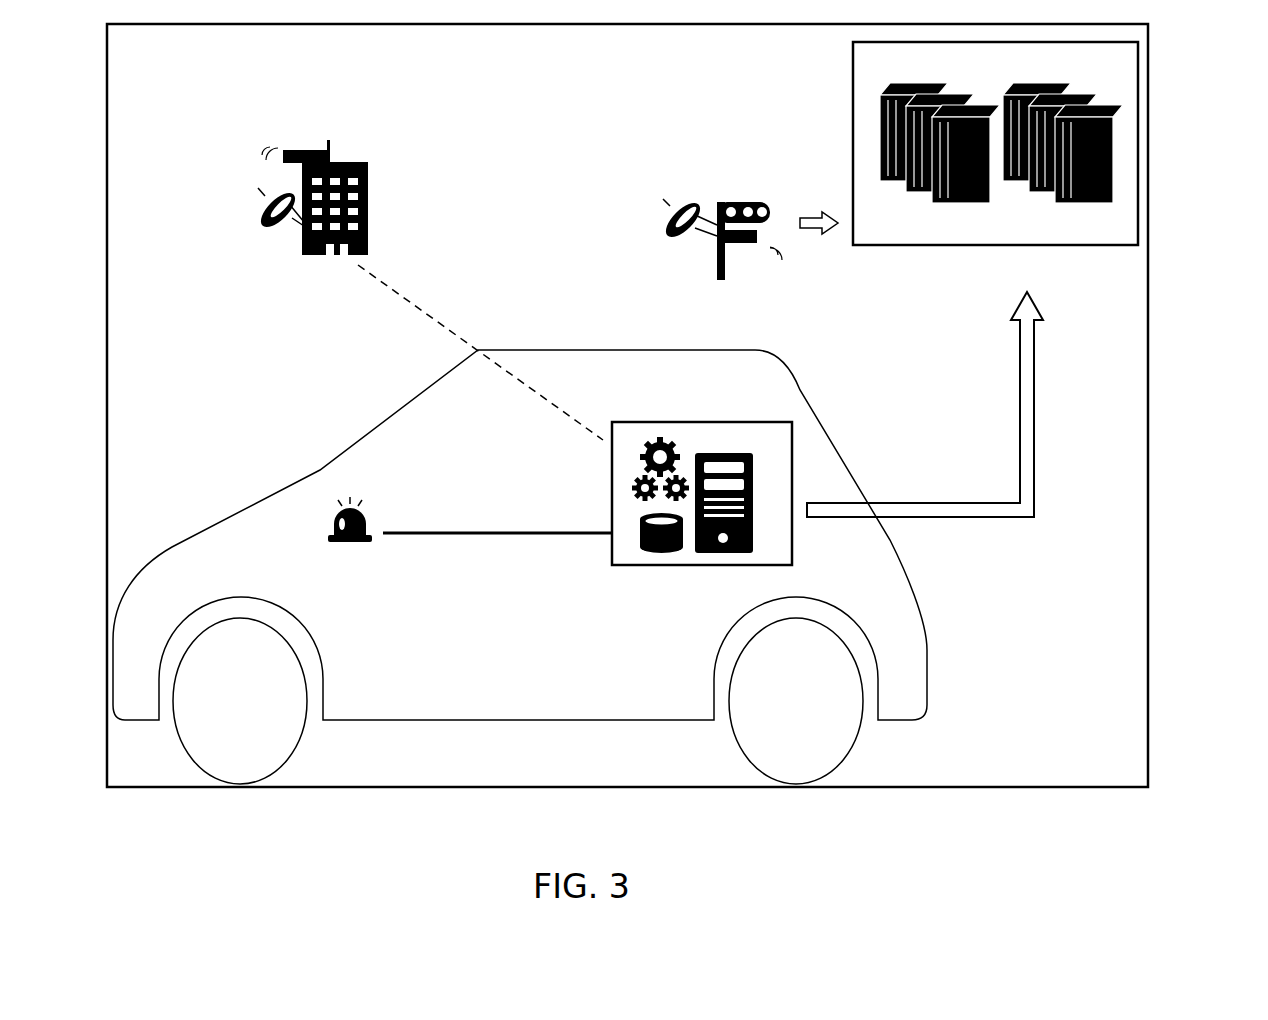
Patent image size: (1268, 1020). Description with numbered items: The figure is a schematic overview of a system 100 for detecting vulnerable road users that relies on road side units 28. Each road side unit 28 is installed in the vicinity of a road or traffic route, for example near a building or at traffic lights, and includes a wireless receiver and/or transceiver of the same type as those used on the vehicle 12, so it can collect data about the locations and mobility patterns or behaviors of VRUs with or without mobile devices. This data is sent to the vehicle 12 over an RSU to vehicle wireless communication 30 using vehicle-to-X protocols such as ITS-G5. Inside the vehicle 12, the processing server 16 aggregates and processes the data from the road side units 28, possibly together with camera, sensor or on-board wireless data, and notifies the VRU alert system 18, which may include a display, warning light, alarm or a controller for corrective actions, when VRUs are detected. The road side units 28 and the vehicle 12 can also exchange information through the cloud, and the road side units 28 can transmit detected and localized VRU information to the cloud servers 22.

The system 100 is at (1180, 100).
The vehicle 12 is at (882, 576).
The processing server 16 is at (600, 580).
The VRU alert system 18 is at (376, 488).
The cloud servers 22 is at (873, 135).
The road side units 28 is at (658, 180).
The RSU to vehicle wireless communication 30 is at (395, 306).